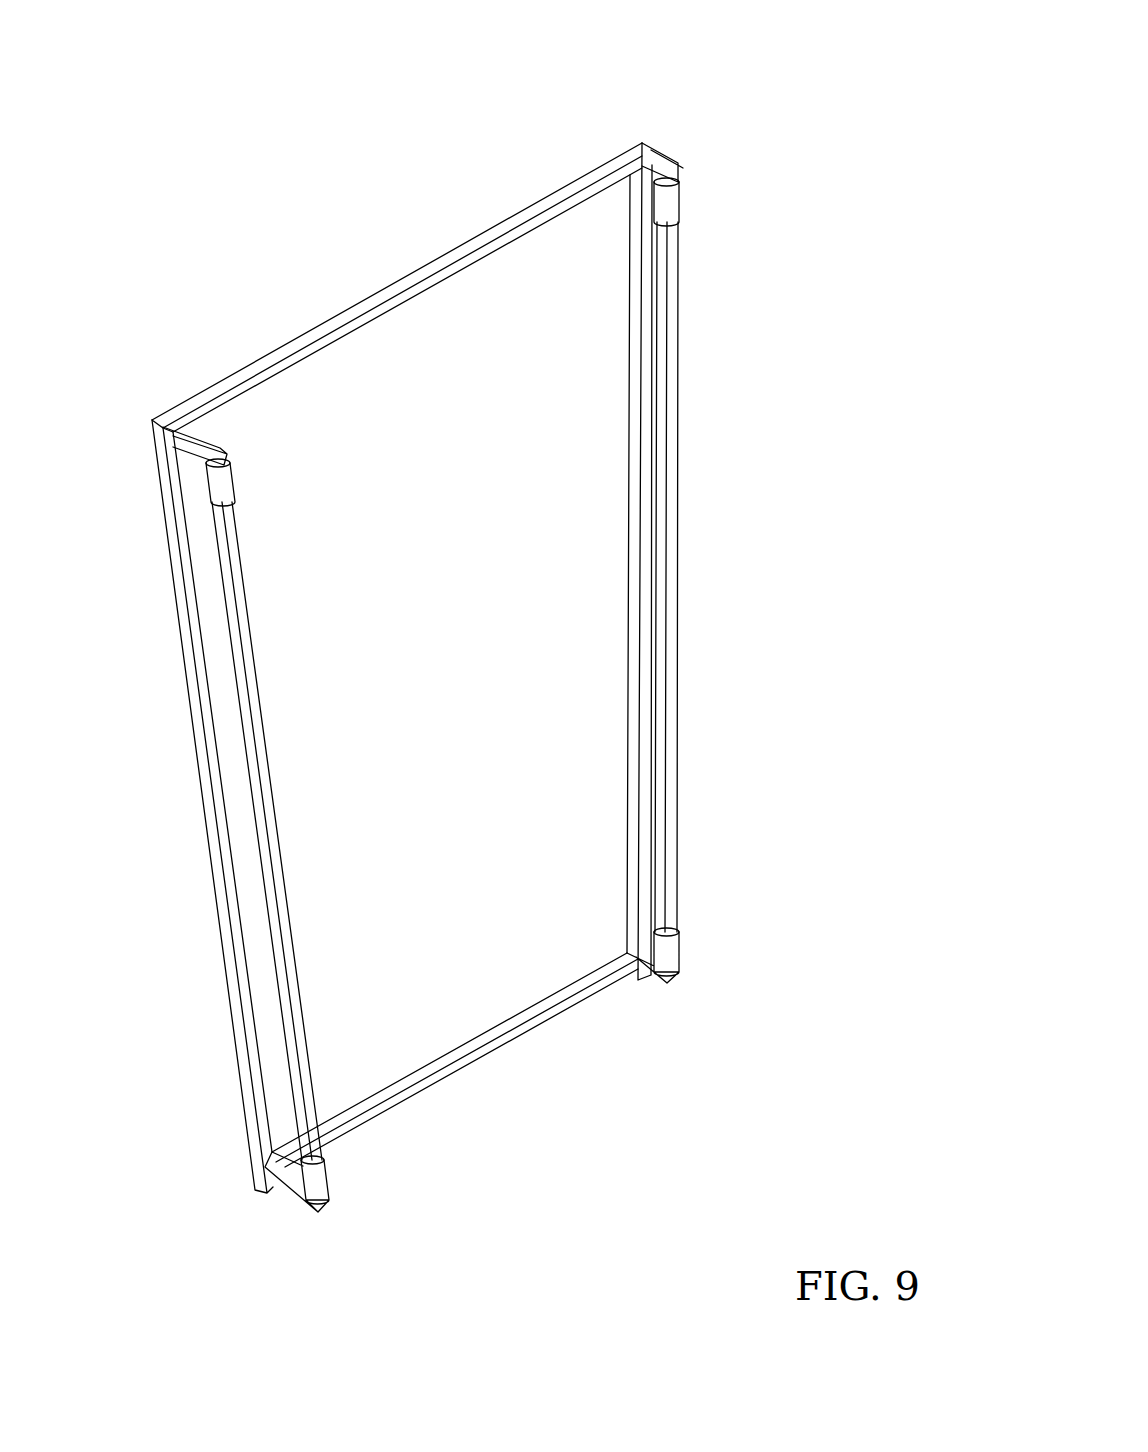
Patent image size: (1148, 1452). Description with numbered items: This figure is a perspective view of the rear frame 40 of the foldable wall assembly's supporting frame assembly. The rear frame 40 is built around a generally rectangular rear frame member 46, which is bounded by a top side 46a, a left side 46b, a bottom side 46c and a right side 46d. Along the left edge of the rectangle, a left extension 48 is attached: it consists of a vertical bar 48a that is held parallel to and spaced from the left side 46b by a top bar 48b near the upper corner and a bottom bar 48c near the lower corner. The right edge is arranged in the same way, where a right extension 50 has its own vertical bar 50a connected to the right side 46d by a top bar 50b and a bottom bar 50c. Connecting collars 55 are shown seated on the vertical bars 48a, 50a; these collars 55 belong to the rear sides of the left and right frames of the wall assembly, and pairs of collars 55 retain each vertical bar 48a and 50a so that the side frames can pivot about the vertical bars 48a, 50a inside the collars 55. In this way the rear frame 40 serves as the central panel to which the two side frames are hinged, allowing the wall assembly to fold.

The rear frame 40 is at (445, 655).
The rear frame member 46 is at (367, 668).
The top side 46a is at (455, 272).
The left side 46b is at (171, 545).
The bottom side 46c is at (532, 1034).
The right side 46d is at (632, 540).
The left extension 48 is at (275, 838).
The vertical bar 48a is at (268, 790).
The top bar 48b is at (205, 441).
The bottom bar 48c is at (282, 1186).
The right extension 50 is at (717, 591).
The vertical bar 50a is at (681, 508).
The top bar 50b is at (660, 160).
The bottom bar 50c is at (650, 975).
The connecting collar 55 is at (681, 205).